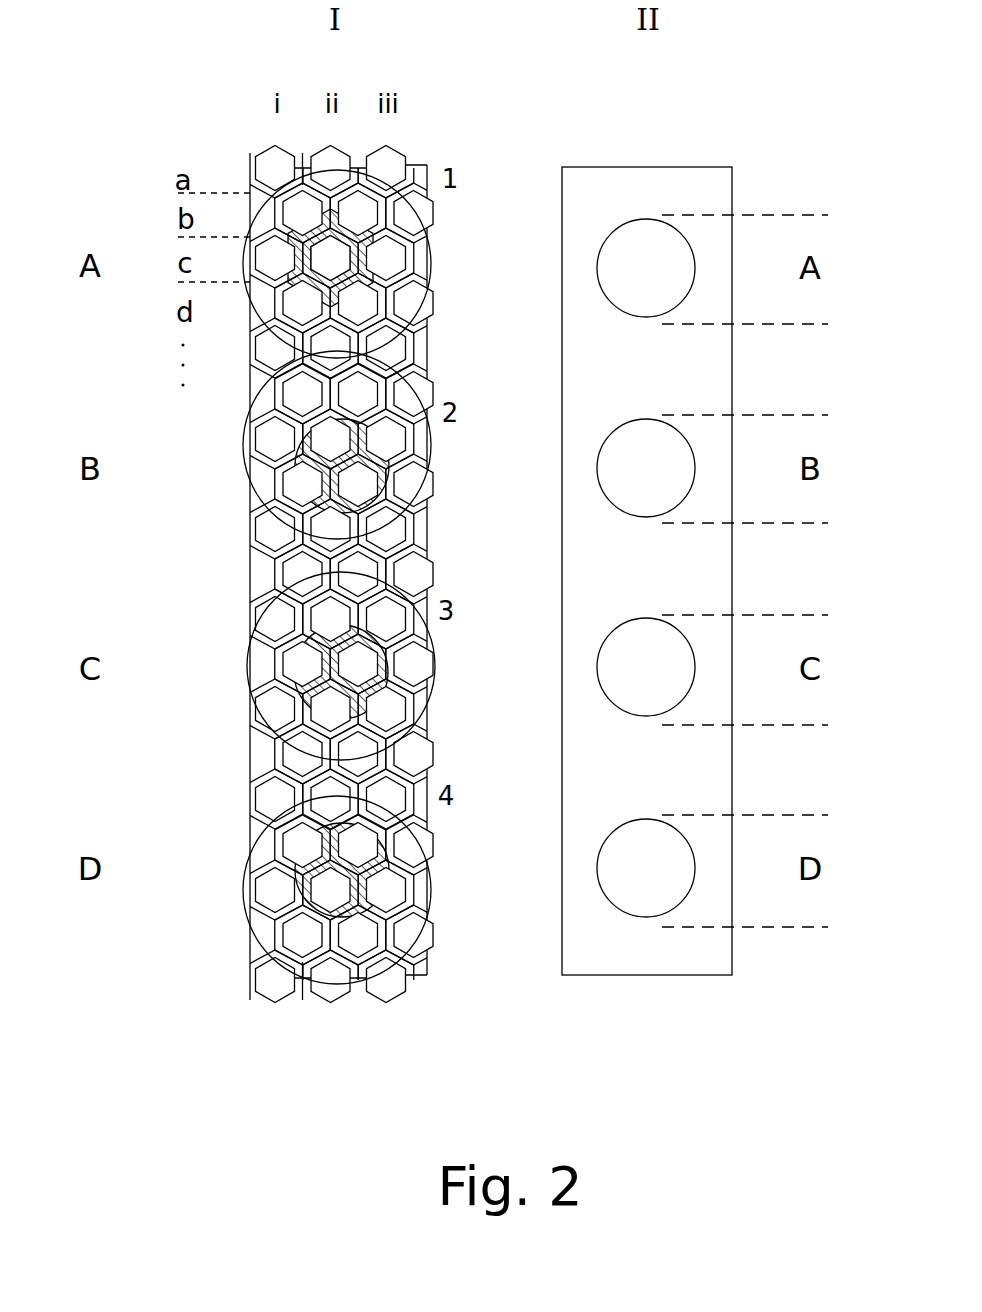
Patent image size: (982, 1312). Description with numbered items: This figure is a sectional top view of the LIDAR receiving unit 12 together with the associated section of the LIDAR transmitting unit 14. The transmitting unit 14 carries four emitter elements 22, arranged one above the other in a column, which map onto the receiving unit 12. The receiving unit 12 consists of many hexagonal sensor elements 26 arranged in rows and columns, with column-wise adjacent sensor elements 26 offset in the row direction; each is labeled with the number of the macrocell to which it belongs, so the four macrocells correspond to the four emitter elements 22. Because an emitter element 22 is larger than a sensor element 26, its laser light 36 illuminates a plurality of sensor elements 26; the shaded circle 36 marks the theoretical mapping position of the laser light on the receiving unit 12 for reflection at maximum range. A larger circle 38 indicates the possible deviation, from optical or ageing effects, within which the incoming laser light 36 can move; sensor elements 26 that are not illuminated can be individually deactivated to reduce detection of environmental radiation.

The LIDAR receiving unit 12 is at (198, 545).
The LIDAR transmitting unit 14 is at (772, 159).
The emitter element 22 is at (646, 568).
The sensor element 26 is at (287, 308).
The circle (laser light mapping) 36 is at (378, 292).
The circle (deviation region) 38 is at (433, 252).